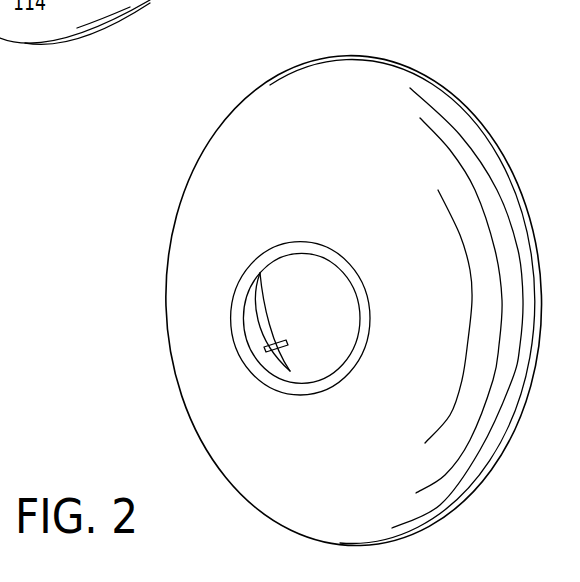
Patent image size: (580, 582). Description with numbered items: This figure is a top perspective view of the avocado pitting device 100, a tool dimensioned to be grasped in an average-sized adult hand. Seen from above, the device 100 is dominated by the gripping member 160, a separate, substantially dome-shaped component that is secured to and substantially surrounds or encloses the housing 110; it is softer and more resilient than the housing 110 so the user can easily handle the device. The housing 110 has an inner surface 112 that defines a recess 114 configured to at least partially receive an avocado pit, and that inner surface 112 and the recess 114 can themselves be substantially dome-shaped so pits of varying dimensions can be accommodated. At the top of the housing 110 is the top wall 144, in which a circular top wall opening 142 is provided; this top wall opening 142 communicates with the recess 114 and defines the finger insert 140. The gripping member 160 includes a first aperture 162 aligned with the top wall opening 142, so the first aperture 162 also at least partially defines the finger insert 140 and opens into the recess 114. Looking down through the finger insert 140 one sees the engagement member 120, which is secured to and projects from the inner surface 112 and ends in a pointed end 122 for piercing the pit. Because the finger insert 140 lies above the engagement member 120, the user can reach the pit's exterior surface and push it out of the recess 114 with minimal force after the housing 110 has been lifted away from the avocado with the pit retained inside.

The avocado pitting device 100 is at (432, 65).
The housing 110 is at (295, 250).
The inner surface 112 is at (256, 341).
The recess 114 is at (338, 307).
The engagement member 120 is at (282, 307).
The pointed end 122 is at (277, 345).
The finger insert 140 is at (290, 280).
The top wall opening 142 is at (363, 312).
The top wall 144 is at (323, 383).
The gripping member 160 is at (298, 98).
The first aperture 162 is at (243, 287).